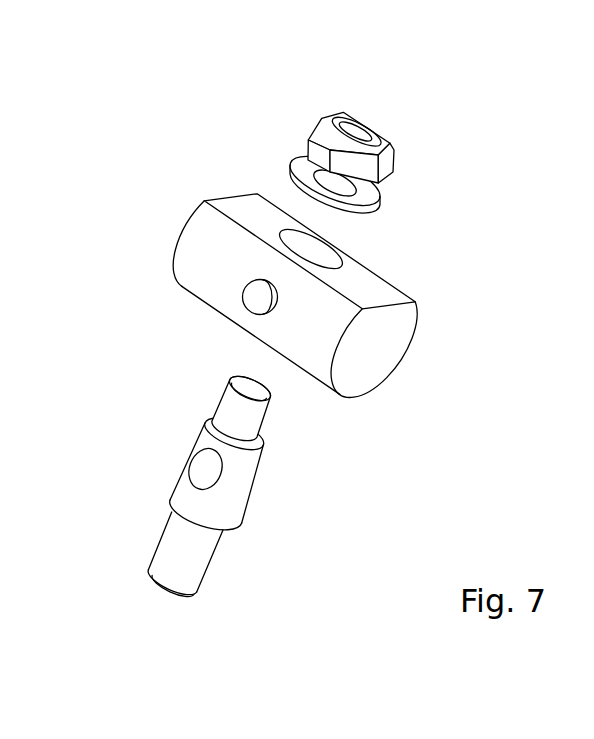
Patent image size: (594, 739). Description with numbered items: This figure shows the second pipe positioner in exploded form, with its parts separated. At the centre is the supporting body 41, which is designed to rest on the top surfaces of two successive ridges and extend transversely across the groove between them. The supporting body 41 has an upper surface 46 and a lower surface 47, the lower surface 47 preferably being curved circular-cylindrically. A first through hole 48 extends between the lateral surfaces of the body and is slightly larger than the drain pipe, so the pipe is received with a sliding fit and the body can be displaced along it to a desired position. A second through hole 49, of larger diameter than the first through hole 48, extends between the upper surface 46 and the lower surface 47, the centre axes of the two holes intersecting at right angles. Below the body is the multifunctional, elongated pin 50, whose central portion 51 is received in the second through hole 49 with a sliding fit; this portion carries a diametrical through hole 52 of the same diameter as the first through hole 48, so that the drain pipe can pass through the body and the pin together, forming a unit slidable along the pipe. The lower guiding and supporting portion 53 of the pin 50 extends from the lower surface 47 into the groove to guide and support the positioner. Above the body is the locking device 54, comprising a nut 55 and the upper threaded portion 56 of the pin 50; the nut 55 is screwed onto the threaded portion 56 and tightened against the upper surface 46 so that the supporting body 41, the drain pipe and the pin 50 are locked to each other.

The supporting body 41 is at (221, 197).
The upper surface 46 is at (382, 297).
The lower surface 47 is at (343, 397).
The first through hole 48 is at (250, 297).
The second through hole 49 is at (327, 257).
The elongated pin 50 is at (247, 493).
The central portion 51 is at (237, 522).
The diametrical through hole 52 is at (202, 468).
The lower guiding and supporting portion 53 is at (208, 578).
The locking device 54 is at (275, 122).
The nut 55 is at (395, 158).
The upper threaded portion 56 is at (243, 413).